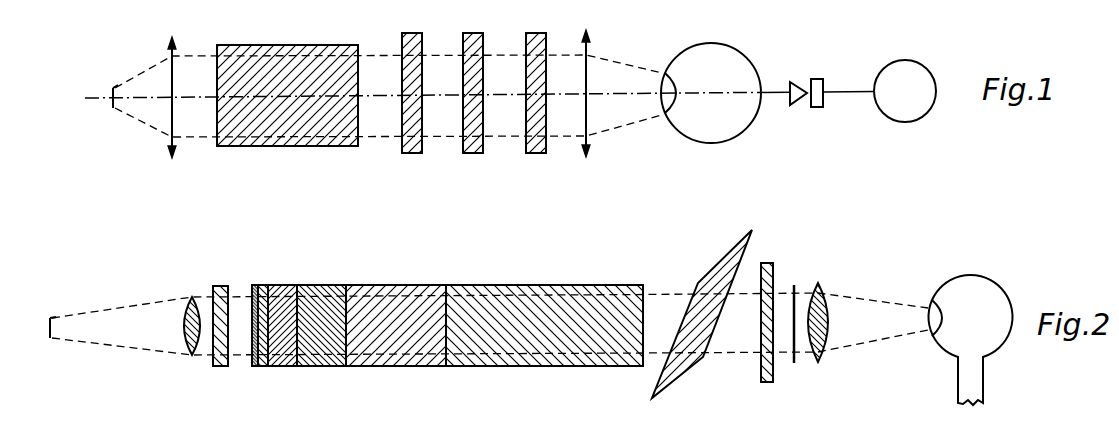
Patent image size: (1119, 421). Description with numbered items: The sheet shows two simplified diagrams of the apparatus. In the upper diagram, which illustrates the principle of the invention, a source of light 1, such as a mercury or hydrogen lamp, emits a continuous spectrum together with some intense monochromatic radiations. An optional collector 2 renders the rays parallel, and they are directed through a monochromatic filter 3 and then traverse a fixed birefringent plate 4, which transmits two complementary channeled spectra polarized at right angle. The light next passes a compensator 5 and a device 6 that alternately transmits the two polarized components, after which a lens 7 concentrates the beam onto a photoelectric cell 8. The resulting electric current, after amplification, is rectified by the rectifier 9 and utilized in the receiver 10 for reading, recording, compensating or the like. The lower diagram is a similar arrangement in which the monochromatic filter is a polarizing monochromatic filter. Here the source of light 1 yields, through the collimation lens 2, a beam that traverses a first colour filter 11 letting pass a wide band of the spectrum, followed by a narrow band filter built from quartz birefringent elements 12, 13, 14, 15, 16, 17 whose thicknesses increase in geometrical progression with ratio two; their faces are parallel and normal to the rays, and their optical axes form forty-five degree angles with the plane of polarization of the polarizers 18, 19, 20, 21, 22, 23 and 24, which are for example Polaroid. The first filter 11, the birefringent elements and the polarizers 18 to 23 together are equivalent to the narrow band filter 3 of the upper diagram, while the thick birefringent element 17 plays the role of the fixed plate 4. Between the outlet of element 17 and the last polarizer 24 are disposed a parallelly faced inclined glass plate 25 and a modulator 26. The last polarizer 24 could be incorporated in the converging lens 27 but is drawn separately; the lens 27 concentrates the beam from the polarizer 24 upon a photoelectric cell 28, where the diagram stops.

In FIG. 1, the source of light 1 is at (113, 108).
In FIG. 2, the source of light 1 is at (49, 340).
In FIG. 1, the collector 2 is at (171, 160).
In FIG. 2, the collector 2 is at (190, 357).
In FIG. 1, the monochromatic filter 3 is at (295, 125).
In FIG. 1, the fixed birefringent plate 4 is at (411, 146).
In FIG. 1, the compensator 5 is at (472, 146).
In FIG. 1, the device alternately transmitting the two polarized components 6 is at (536, 146).
In FIG. 1, the lens 7 is at (586, 157).
In FIG. 1, the photoelectric cell 8 is at (724, 125).
In FIG. 1, the rectifier 9 is at (812, 108).
In FIG. 1, the receiver 10 is at (897, 100).
In FIG. 2, the first colour filter 11 is at (219, 369).
In FIG. 2, the birefringent element 12 is at (255, 285).
In FIG. 2, the birefringent element 13 is at (264, 290).
In FIG. 2, the birefringent element 14 is at (285, 300).
In FIG. 2, the birefringent element 15 is at (325, 300).
In FIG. 2, the birefringent element 16 is at (393, 302).
In FIG. 2, the birefringent element 17 is at (543, 310).
In FIG. 2, the polarizer 18 is at (254, 367).
In FIG. 2, the polarizer 19 is at (259, 368).
In FIG. 2, the polarizer 20 is at (268, 368).
In FIG. 2, the polarizer 21 is at (297, 368).
In FIG. 2, the polarizer 22 is at (347, 368).
In FIG. 2, the polarizer 23 is at (446, 368).
In FIG. 2, the last polarizer 24 is at (794, 364).
In FIG. 2, the inclined glass plate 25 is at (698, 313).
In FIG. 2, the modulator 26 is at (770, 263).
In FIG. 2, the converging lens 27 is at (822, 297).
In FIG. 2, the photoelectric cell 28 is at (965, 300).